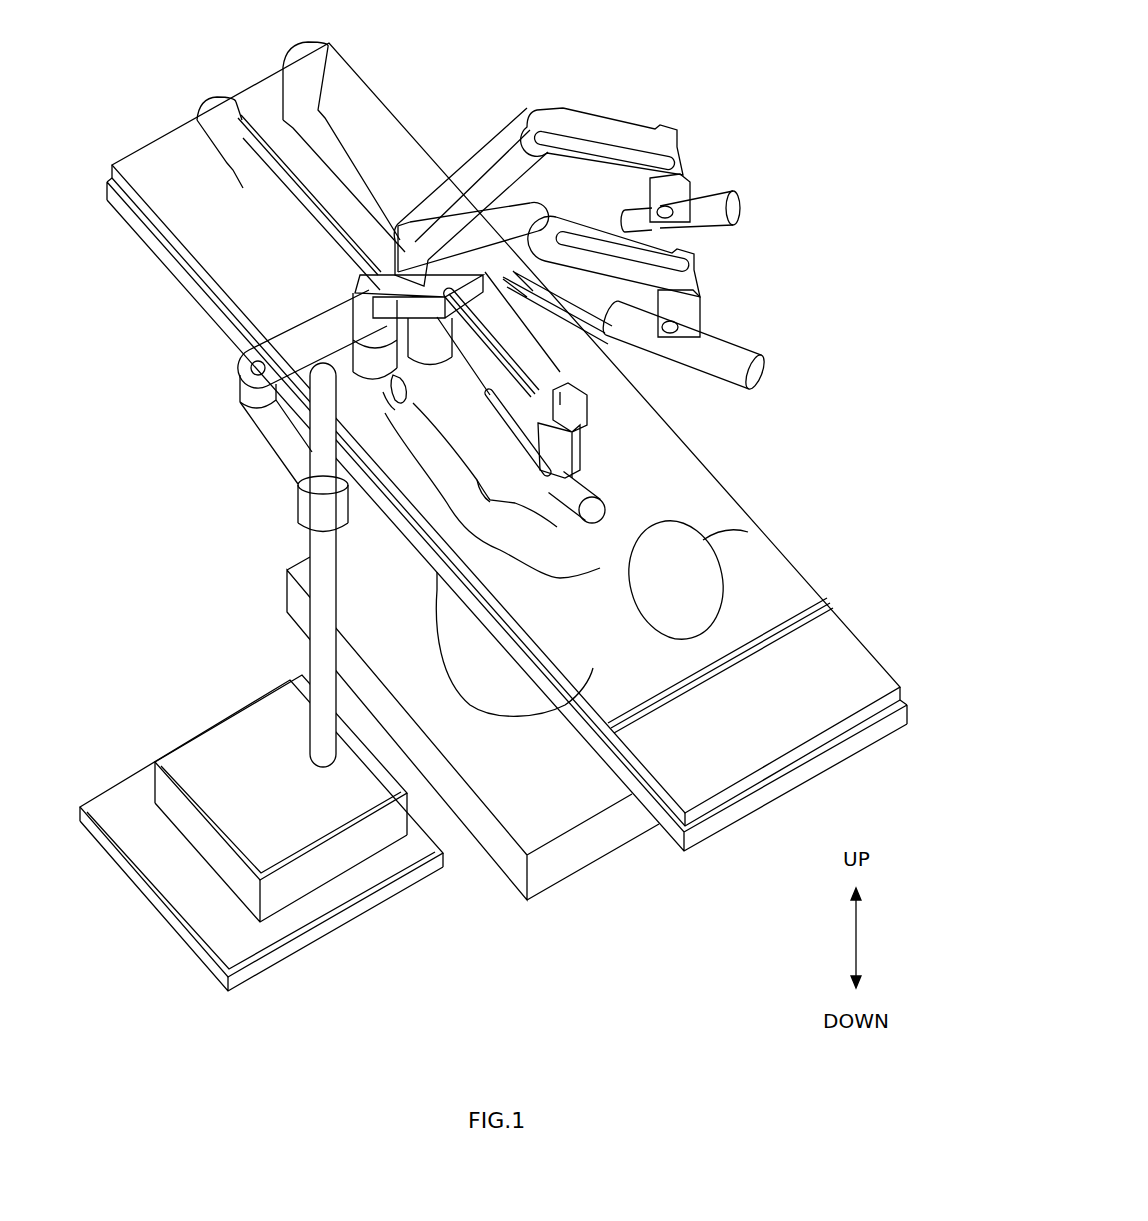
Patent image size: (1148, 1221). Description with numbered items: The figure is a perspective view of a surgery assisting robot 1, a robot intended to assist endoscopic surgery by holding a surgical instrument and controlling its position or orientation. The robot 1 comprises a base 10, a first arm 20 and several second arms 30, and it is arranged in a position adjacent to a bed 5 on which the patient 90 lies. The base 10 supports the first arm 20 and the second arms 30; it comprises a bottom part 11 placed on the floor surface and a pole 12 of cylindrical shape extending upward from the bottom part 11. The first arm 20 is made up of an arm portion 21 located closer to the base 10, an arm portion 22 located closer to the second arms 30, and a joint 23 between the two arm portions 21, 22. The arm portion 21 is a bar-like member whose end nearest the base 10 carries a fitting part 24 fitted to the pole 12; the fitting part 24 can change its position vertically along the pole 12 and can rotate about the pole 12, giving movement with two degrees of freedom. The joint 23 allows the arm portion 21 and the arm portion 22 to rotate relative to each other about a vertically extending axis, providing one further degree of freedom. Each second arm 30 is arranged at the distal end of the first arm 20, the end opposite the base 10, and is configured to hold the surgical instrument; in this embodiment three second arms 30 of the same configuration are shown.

The surgery assisting robot 1 is at (493, 523).
The bed 5 is at (823, 653).
The base 10 is at (261, 699).
The bottom part 11 is at (240, 947).
The pole 12 is at (320, 655).
The first arm 20 is at (295, 416).
The arm portion 21 is at (290, 430).
The arm portion 22 is at (298, 342).
The joint 23 is at (247, 352).
The fitting part 24 is at (292, 516).
The second arm 30 is at (629, 311).
The patient 90 is at (690, 553).